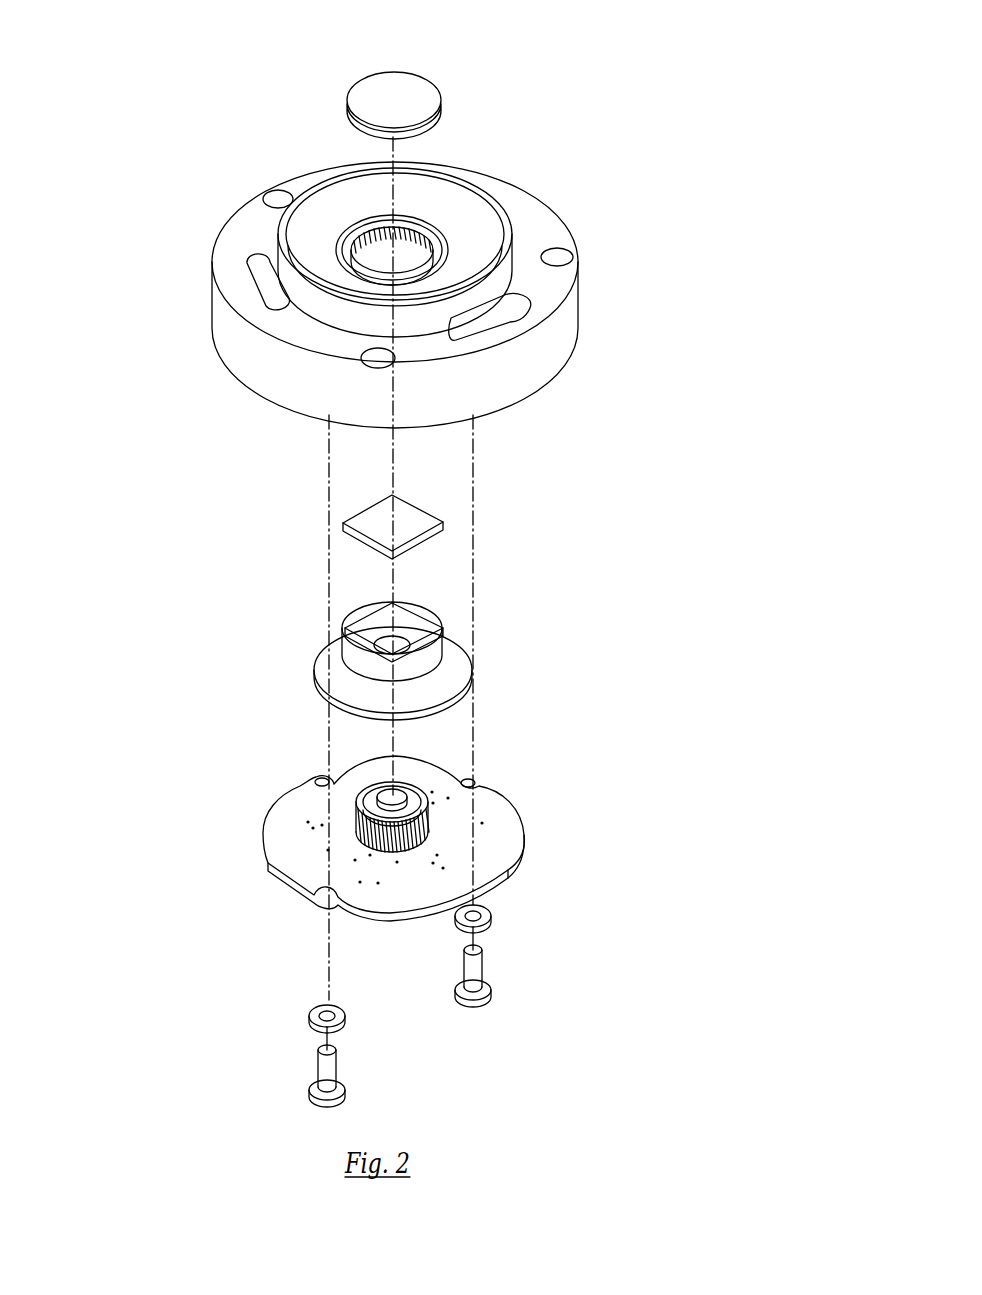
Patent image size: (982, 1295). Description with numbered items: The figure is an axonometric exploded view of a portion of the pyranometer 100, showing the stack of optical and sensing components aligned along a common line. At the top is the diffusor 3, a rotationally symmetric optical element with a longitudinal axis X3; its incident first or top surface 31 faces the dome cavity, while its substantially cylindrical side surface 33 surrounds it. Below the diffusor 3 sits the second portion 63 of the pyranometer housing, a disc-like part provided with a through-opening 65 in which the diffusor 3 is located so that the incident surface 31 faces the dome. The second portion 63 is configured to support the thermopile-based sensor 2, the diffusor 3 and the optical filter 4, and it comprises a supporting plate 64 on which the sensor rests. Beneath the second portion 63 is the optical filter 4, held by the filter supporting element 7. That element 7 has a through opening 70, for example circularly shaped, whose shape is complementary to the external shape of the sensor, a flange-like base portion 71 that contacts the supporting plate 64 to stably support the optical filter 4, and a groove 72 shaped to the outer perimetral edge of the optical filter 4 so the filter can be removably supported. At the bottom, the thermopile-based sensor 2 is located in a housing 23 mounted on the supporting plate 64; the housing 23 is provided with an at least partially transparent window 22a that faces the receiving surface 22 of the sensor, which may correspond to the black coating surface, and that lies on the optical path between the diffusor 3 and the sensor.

The pyranometer 100 is at (700, 188).
The longitudinal axis X3 is at (398, 148).
The diffusor 3 is at (463, 88).
The incident first or top surface 31 is at (367, 102).
The side surface 33 is at (350, 118).
The second portion 63 is at (243, 232).
The through-opening 65 is at (452, 250).
The optical filter 4 is at (377, 518).
The filter supporting element 7 is at (297, 642).
The through opening 70 is at (412, 623).
The base portion 71 is at (450, 670).
The groove 72 is at (367, 607).
The thermopile-based sensor 2 is at (270, 812).
The receiving surface 22 is at (313, 779).
The window 22a is at (400, 788).
The housing 23 is at (434, 822).
The supporting plate 64 is at (475, 858).